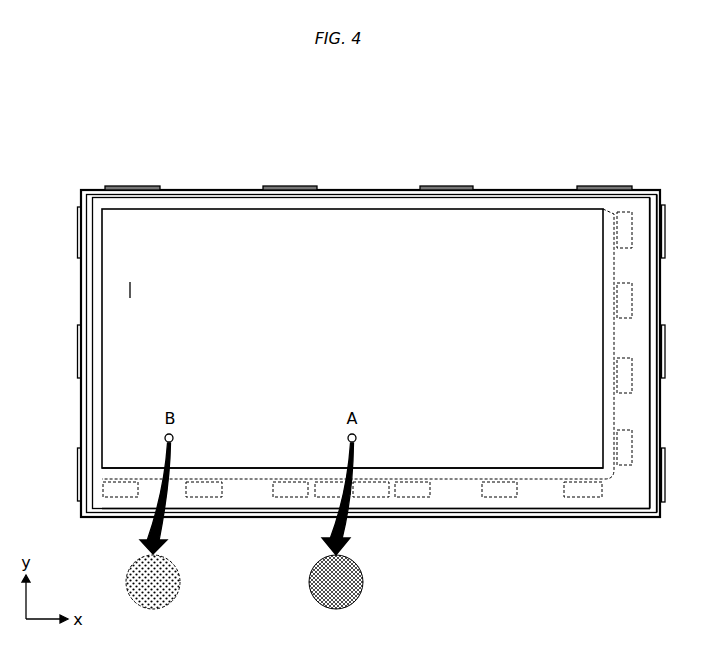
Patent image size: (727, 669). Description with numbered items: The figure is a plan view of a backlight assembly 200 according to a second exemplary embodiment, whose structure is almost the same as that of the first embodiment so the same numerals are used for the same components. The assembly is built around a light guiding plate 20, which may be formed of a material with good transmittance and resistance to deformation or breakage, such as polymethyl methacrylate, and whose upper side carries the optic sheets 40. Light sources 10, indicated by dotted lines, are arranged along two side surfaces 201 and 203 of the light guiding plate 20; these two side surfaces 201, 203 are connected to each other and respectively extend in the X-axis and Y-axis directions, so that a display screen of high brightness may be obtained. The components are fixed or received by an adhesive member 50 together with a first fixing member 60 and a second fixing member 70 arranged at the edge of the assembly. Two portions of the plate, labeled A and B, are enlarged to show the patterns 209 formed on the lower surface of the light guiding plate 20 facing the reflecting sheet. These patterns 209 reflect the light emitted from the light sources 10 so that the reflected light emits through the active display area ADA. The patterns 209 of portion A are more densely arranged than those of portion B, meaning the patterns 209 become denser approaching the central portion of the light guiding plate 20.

The backlight assembly 200 is at (332, 156).
The optic sheets 40 is at (492, 230).
The active display area ADA is at (128, 290).
The side surface 203 is at (614, 405).
The light source 10 is at (625, 468).
The first fixing member 60 is at (655, 268).
The adhesive member 50 is at (640, 298).
The second fixing member 70 is at (665, 346).
The light guiding plate 20 is at (251, 472).
The side surface 201 is at (455, 480).
The patterns 209 is at (170, 590).